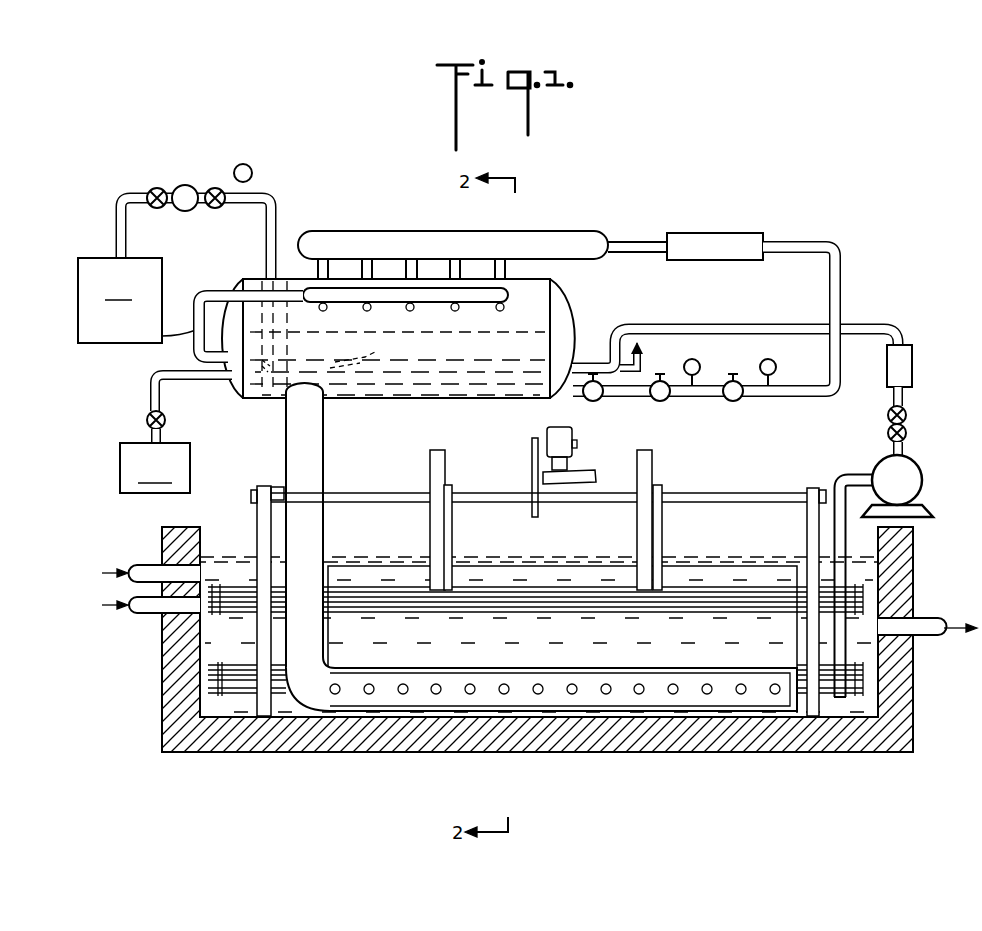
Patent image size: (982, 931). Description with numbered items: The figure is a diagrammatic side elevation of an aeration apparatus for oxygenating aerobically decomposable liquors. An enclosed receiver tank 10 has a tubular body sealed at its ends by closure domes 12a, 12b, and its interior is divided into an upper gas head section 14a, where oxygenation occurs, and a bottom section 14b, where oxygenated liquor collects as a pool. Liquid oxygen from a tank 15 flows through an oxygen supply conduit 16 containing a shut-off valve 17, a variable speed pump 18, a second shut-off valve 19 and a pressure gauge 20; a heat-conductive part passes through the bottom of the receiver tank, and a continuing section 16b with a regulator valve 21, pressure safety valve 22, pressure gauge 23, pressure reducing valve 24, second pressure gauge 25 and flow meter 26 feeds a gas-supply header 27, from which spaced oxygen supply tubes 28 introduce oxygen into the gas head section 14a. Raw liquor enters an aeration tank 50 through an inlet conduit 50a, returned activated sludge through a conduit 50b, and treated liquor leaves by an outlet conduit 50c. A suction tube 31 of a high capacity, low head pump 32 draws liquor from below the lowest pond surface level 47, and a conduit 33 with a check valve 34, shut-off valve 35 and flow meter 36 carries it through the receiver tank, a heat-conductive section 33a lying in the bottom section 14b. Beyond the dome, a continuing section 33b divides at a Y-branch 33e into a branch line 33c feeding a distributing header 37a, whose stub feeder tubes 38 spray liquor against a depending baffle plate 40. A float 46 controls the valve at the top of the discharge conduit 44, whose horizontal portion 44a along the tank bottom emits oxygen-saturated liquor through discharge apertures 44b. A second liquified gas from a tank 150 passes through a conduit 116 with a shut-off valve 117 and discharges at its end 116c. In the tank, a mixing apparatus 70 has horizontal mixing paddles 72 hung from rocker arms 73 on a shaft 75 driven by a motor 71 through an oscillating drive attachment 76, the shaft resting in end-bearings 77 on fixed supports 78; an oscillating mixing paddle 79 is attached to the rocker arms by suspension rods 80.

The receiver tank 10 is at (247, 266).
The closure dome 12a is at (232, 383).
The closure dome 12b is at (567, 311).
The gas head section 14a is at (543, 311).
The bottom section 14b is at (253, 384).
The tank 15 is at (120, 300).
The oxygen supply conduit 16 is at (116, 214).
The continuing section of oxygen supply conduit 16b is at (841, 306).
The shut-off valve 17 is at (153, 189).
The variable speed pump 18 is at (185, 185).
The second shut-off valve 19 is at (214, 188).
The pressure gauge 20 is at (253, 170).
The regulator valve 21 is at (597, 400).
The pressure safety valve 22 is at (665, 400).
The pressure gauge 23 is at (698, 364).
The pressure reducing valve 24 is at (738, 400).
The second pressure gauge 25 is at (775, 366).
The flow meter 26 is at (703, 245).
The gas-supply header 27 is at (396, 240).
The oxygen supply tubes 28 is at (370, 260).
The suction tube 31 is at (840, 578).
The pump 32 is at (922, 477).
The conduit 33 is at (745, 326).
The heat-conductive section 33a is at (579, 354).
The continuing section 33b is at (193, 350).
The branch line 33c is at (198, 291).
The Y-branch 33e is at (156, 326).
The check valve 34 is at (906, 433).
The shut-off valve 35 is at (906, 412).
The flow meter 36 is at (912, 356).
The raw liquor supply distributing header 37a is at (438, 303).
The stub feeder tubes 38 is at (325, 313).
The baffle plate 40 is at (470, 333).
The discharge conduit 44 is at (324, 456).
The horizontal portion 44a is at (563, 700).
The discharge apertures 44b is at (707, 697).
The float 46 is at (335, 352).
The pond surface level 47 is at (372, 564).
The aeration tank 50 is at (204, 525).
The inlet conduit 50a is at (143, 564).
The conduit 50b is at (142, 614).
The outlet conduit 50c is at (924, 620).
The mixing apparatus 70 is at (678, 481).
The motor 71 is at (574, 452).
The mixing paddles 72 is at (510, 590).
The rocker arm 73 is at (446, 452).
The shaft 75 is at (742, 496).
The oscillating drive attachment 76 is at (528, 478).
The end-bearings 77 is at (278, 486).
The fixed support 78 is at (257, 526).
The oscillating mixing paddle 79 is at (565, 558).
The suspension rods 80 is at (452, 529).
The secondary liquified gas-carrying conduit 116 is at (163, 433).
The end of conduit 116c is at (642, 358).
The shut-off valve 117 is at (148, 416).
The tank 150 is at (155, 468).